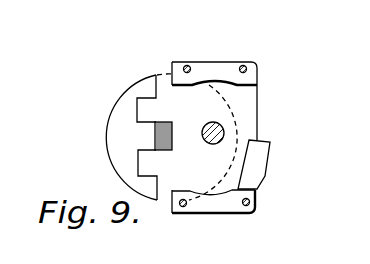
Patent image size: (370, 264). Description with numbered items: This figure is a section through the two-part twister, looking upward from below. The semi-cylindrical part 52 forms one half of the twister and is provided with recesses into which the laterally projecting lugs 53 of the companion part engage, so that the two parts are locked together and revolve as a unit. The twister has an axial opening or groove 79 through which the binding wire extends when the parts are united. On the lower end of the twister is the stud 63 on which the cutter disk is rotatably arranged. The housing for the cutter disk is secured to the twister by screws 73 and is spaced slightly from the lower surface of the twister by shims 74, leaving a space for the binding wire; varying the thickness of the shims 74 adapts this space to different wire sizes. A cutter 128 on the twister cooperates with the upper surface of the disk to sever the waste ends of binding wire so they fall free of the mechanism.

The semi-cylindrical part 52 is at (117, 107).
The laterally projecting lugs 53 is at (143, 165).
The stud 63 is at (212, 122).
The screws 73 is at (186, 66).
The shims 74 is at (207, 70).
The axial opening or groove 79 is at (155, 121).
The cutter 128 is at (263, 146).